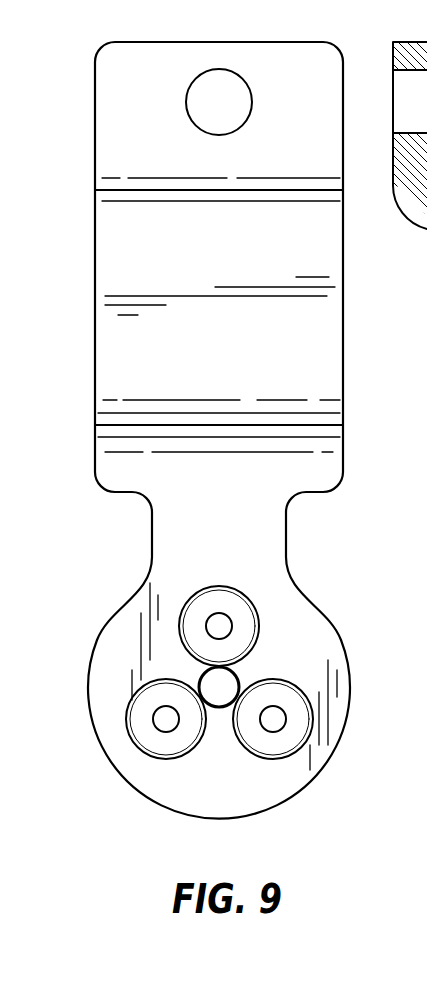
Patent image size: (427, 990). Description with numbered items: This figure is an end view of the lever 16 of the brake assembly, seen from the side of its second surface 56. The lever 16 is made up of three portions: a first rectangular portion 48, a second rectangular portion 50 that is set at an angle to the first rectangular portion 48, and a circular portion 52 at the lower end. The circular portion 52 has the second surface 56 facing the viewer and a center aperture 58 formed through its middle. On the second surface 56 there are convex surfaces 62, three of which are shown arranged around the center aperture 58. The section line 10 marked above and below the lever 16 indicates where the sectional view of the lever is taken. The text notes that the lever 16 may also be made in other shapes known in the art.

The section line 10- 10 is at (219, 8).
The lever 16 is at (283, 50).
The first rectangular portion 48 is at (120, 73).
The second rectangular portion 50 is at (137, 256).
The circular portion 52 is at (315, 622).
The second surface 56 is at (343, 688).
The center aperture 58 is at (205, 681).
The convex surfaces 62 is at (223, 600).